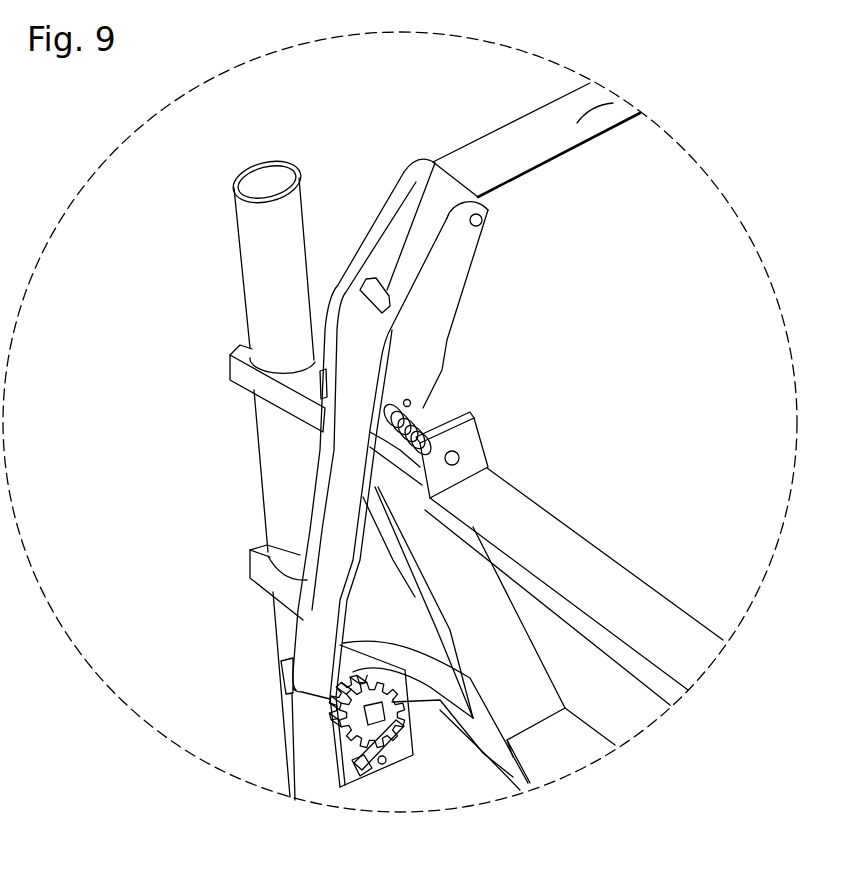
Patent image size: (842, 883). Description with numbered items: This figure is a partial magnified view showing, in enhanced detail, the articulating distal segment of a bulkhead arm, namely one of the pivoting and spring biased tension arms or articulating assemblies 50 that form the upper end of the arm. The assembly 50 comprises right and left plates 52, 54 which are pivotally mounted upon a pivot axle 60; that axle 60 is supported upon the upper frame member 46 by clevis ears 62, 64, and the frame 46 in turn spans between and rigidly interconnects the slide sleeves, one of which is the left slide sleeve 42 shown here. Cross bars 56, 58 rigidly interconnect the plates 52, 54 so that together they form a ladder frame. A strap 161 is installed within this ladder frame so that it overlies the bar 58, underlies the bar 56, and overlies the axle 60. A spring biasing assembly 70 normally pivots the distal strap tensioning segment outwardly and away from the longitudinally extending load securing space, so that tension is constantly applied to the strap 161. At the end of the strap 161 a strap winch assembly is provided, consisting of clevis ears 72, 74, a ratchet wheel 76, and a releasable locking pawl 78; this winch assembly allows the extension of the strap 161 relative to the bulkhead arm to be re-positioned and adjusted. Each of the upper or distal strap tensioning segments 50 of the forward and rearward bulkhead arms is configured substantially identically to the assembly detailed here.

The left slide sleeve 42 is at (297, 743).
The upper frame member 46 is at (587, 547).
The articulating assembly 50 is at (403, 131).
The right plate 52 is at (447, 313).
The left plate 54 is at (370, 227).
The cross bar 56 is at (377, 297).
The cross bar 58 is at (490, 219).
The pivot axle 60 is at (459, 457).
The clevis ear 62 is at (477, 414).
The clevis ear 64 is at (322, 410).
The spring biasing assembly 70 is at (423, 397).
The clevis ear 72 is at (330, 758).
The clevis ear 74 is at (282, 678).
The ratchet wheel 76 is at (530, 783).
The releasable locking pawl 78 is at (395, 752).
The strap 161 is at (625, 103).